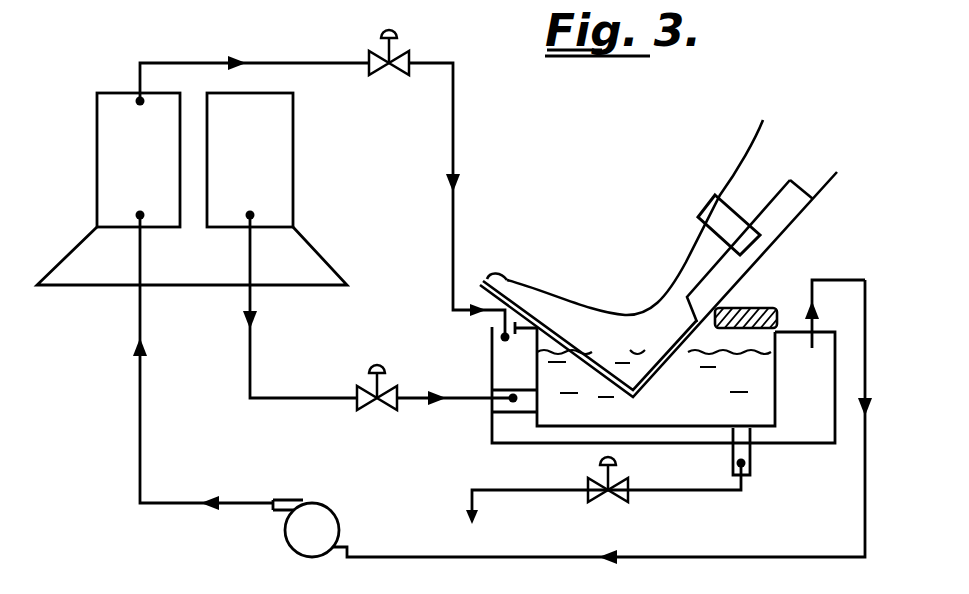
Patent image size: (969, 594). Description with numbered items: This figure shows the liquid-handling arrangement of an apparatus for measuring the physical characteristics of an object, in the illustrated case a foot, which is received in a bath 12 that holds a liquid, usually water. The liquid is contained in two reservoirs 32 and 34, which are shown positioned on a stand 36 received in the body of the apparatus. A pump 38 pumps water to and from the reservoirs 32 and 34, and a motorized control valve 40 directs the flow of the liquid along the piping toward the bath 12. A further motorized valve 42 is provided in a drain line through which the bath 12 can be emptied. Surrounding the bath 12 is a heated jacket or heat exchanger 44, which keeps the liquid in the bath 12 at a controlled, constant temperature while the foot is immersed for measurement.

The bath 12 is at (651, 413).
The reservoir 32 is at (107, 150).
The reservoir 34 is at (277, 155).
The stand 36 is at (307, 267).
The pump 38 is at (328, 520).
The motorized control valve 40 is at (361, 392).
The motorized valve 42 is at (600, 500).
The heated jacket or heat exchanger 44 is at (797, 430).